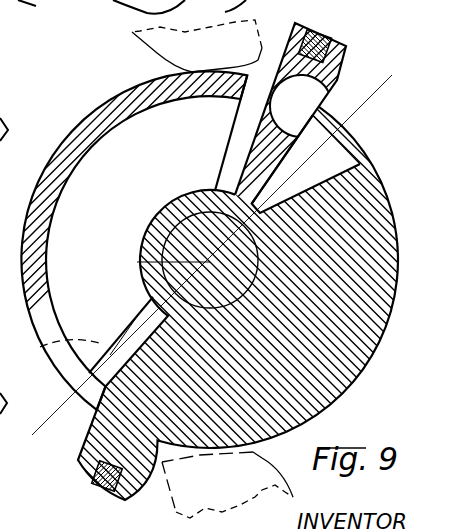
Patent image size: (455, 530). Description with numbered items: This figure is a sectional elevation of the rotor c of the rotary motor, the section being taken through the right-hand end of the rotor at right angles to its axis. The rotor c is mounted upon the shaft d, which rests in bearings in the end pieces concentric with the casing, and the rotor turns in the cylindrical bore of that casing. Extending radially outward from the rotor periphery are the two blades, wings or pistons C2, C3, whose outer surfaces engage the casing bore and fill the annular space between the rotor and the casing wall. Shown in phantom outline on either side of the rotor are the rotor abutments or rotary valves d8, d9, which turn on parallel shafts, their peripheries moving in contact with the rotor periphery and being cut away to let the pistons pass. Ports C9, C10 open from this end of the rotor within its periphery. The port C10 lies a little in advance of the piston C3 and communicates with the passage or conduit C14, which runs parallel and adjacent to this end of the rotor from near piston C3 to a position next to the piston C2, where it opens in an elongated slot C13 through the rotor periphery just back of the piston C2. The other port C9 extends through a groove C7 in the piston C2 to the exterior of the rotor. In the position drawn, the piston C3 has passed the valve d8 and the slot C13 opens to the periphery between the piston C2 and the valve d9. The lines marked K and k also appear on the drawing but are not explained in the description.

The rotor c is at (378, 298).
The passage or conduit C14 is at (93, 133).
The elongated slot C13 is at (254, 85).
The blade, wing or piston C2 is at (331, 50).
The groove C7 is at (299, 106).
The port C9 is at (332, 156).
The port C10 is at (112, 340).
The blade, wing or piston C3 is at (78, 463).
The shaft d is at (194, 232).
The rotor abutment or rotary valve d8 is at (215, 491).
The rotor abutment or rotary valve d9 is at (185, 46).
The axis line K is at (214, 249).
The center line k is at (163, 256).